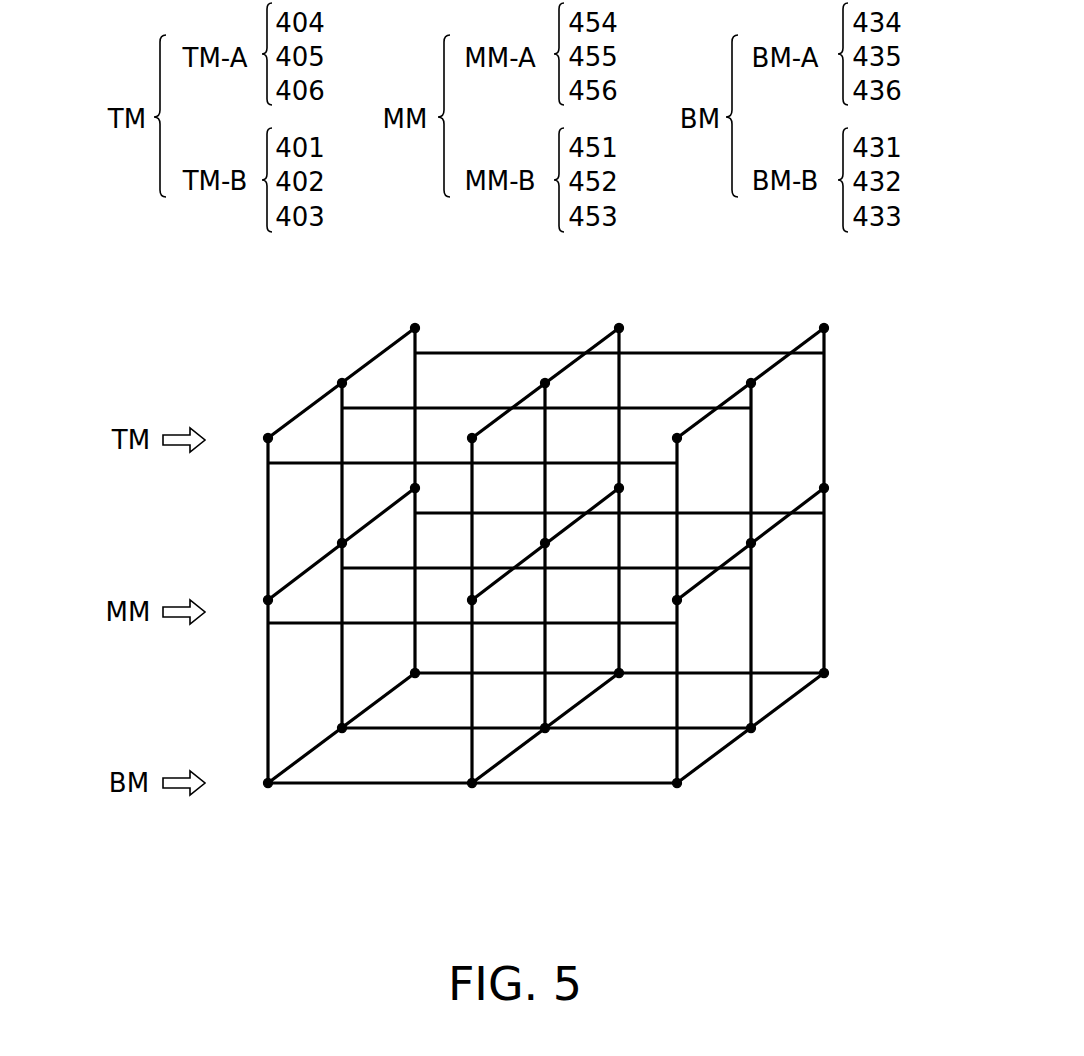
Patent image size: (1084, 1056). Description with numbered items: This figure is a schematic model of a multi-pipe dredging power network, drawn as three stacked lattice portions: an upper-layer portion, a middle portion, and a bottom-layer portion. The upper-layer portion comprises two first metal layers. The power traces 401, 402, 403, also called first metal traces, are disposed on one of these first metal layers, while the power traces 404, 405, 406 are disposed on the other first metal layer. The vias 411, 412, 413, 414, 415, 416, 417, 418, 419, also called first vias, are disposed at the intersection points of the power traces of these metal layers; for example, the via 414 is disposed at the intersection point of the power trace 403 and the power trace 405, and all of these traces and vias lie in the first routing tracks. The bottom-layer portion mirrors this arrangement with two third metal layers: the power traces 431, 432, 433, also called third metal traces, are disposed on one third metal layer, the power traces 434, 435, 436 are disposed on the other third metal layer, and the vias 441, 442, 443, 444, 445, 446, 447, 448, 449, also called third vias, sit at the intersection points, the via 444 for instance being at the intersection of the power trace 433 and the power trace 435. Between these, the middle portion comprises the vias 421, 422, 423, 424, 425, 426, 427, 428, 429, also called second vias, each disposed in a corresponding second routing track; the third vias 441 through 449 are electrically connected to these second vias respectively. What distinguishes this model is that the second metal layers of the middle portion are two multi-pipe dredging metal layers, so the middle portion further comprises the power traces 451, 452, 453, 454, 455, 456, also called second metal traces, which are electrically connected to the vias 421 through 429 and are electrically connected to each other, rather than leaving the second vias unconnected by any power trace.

The power trace 401 is at (447, 352).
The power trace 402 is at (447, 407).
The power trace 403 is at (378, 462).
The power trace 404 is at (375, 358).
The power trace 405 is at (590, 350).
The power trace 406 is at (795, 350).
The via 411 is at (266, 436).
The via 412 is at (340, 381).
The via 413 is at (413, 326).
The via 414 is at (475, 438).
The via 415 is at (548, 383).
The via 416 is at (622, 328).
The via 417 is at (680, 438).
The via 418 is at (754, 383).
The via 419 is at (827, 328).
The via 421 is at (266, 598).
The via 422 is at (340, 541).
The via 423 is at (413, 488).
The via 424 is at (470, 600).
The via 425 is at (543, 543).
The via 426 is at (617, 488).
The via 427 is at (675, 600).
The via 428 is at (749, 543).
The via 429 is at (822, 488).
The power trace 431 is at (505, 674).
The power trace 432 is at (445, 727).
The power trace 433 is at (372, 785).
The power trace 434 is at (290, 766).
The power trace 435 is at (495, 766).
The power trace 436 is at (700, 766).
The via 441 is at (266, 781).
The via 442 is at (340, 726).
The via 443 is at (413, 675).
The via 444 is at (470, 781).
The via 445 is at (547, 727).
The via 446 is at (619, 676).
The via 447 is at (675, 781).
The via 448 is at (753, 727).
The via 449 is at (826, 672).
The power trace 451 is at (447, 512).
The power trace 452 is at (447, 567).
The power trace 453 is at (372, 622).
The power trace 454 is at (368, 524).
The power trace 455 is at (572, 524).
The power trace 456 is at (777, 524).